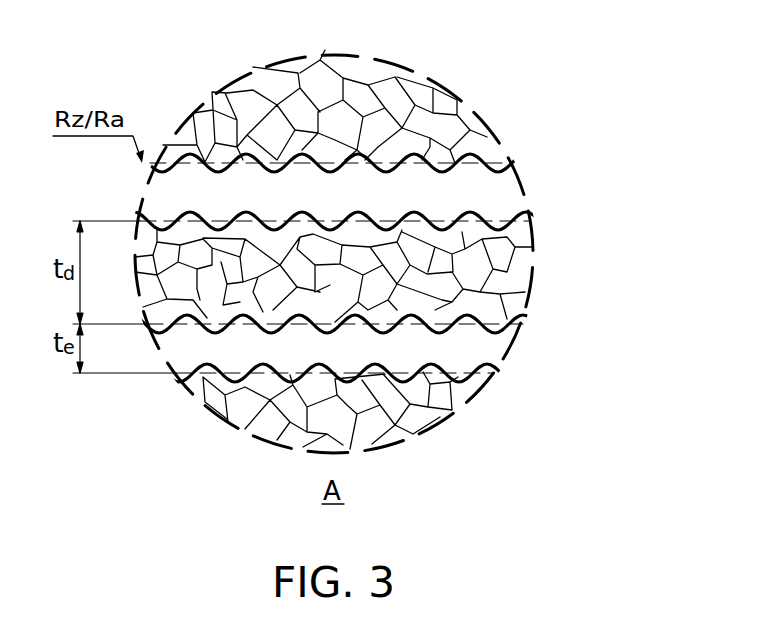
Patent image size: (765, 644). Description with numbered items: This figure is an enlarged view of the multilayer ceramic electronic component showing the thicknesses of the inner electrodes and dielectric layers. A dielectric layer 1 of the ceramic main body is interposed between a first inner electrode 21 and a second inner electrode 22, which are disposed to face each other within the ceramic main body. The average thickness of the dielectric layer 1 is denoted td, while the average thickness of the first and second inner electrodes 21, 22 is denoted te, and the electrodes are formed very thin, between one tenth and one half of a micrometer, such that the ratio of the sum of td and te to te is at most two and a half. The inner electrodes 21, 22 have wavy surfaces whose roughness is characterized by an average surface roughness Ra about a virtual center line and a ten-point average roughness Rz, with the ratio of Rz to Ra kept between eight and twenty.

The dielectric layer 1 is at (470, 120).
The first inner electrode 21 is at (508, 197).
The second inner electrode 22 is at (485, 345).